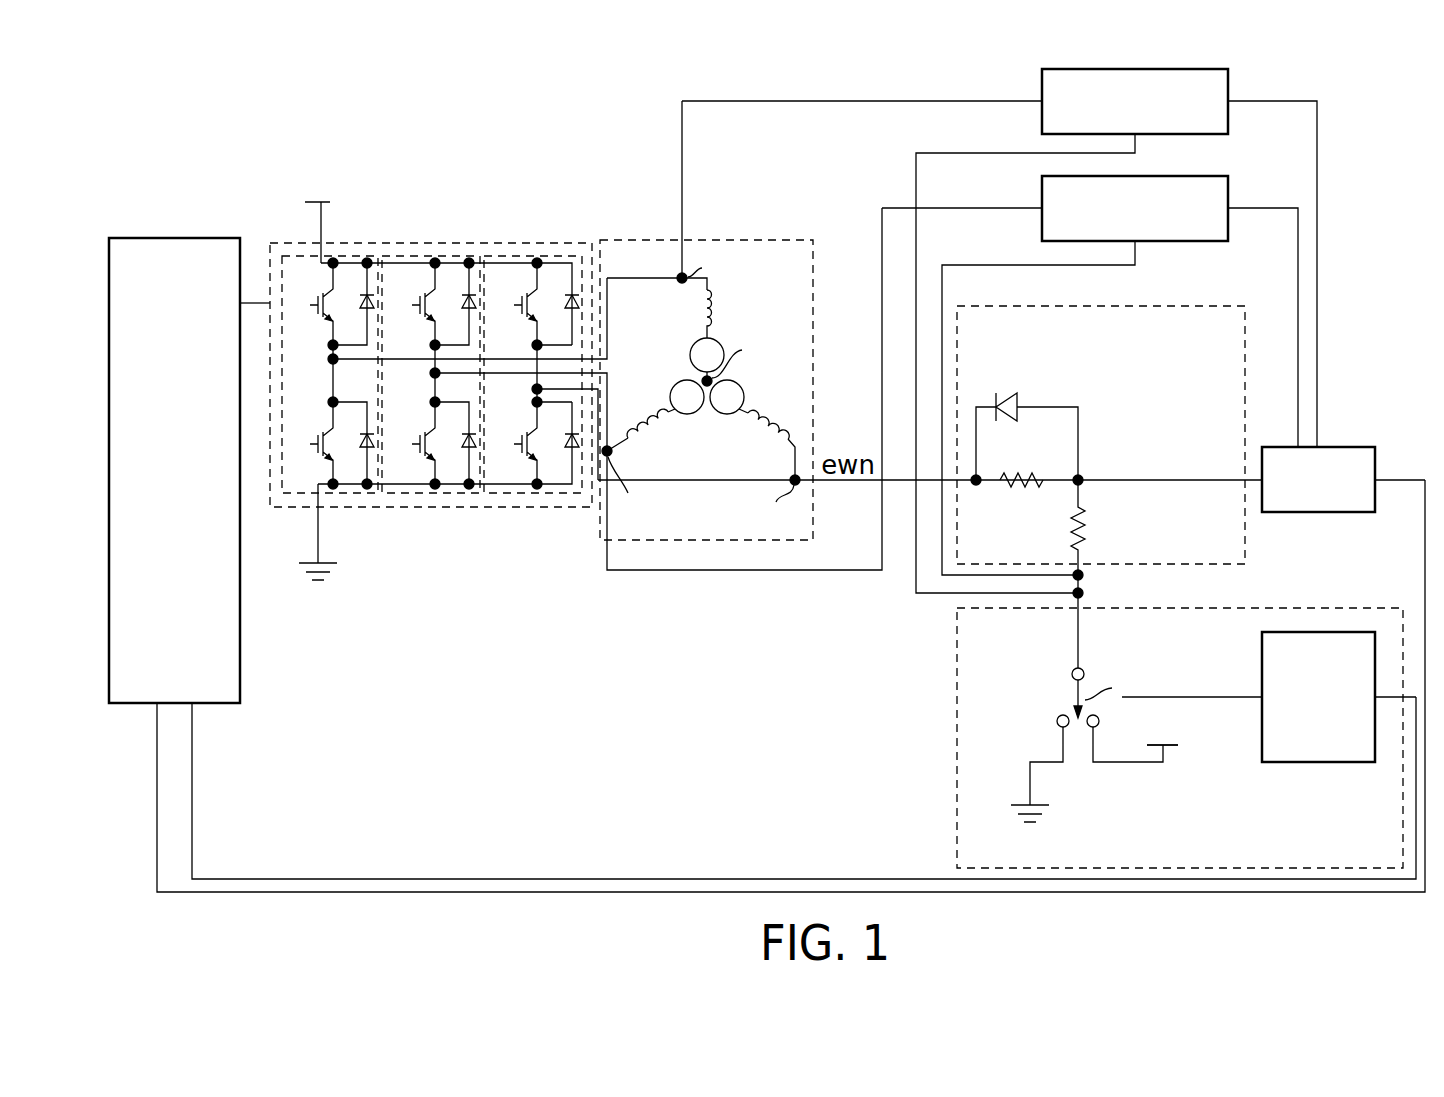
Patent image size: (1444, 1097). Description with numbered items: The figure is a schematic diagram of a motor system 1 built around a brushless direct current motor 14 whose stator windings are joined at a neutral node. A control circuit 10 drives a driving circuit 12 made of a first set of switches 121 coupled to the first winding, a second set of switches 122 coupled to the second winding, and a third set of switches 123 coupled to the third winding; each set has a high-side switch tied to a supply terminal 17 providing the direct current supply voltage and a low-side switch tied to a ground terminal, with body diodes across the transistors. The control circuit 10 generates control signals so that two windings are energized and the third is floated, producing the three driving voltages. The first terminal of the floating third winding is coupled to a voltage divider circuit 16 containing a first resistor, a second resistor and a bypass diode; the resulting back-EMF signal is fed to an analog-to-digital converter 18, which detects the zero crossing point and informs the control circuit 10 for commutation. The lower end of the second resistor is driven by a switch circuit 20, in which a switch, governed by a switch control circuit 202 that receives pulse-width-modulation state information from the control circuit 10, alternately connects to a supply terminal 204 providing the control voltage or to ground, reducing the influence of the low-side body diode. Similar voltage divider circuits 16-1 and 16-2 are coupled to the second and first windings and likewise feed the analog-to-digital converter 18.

The motor system 1 is at (1362, 100).
The control circuit 10 is at (168, 238).
The driving circuit 12 is at (465, 242).
The first set of switches 121 is at (338, 256).
The second set of switches 122 is at (403, 256).
The third set of switches 123 is at (523, 256).
The brushless direct current motor 14 is at (705, 240).
The voltage divider circuit 16 is at (1245, 347).
The voltage divider circuit 16-1 is at (1112, 223).
The voltage divider circuit 16-2 is at (1112, 116).
The supply terminal 17 is at (330, 204).
The analog-to-digital converter 18 is at (1343, 447).
The switch circuit 20 is at (1330, 608).
The switch control circuit 202 is at (1318, 762).
The supply terminal 204 is at (1175, 757).